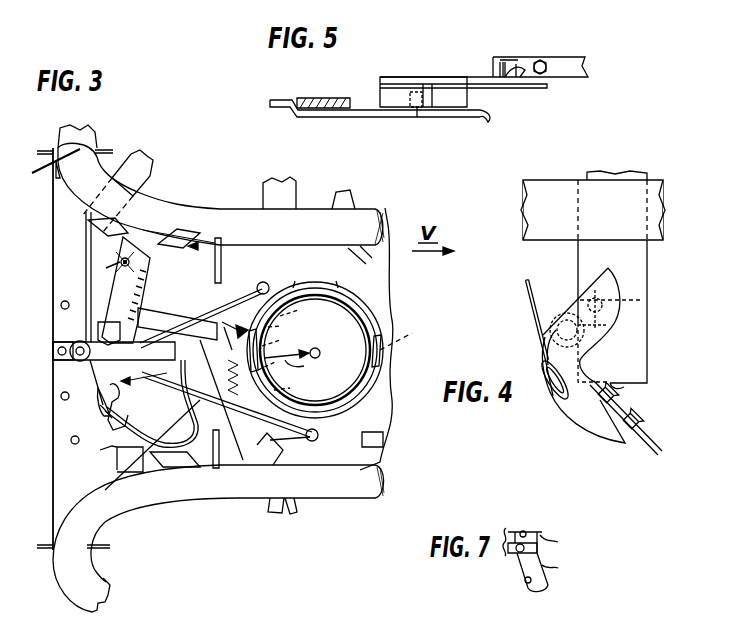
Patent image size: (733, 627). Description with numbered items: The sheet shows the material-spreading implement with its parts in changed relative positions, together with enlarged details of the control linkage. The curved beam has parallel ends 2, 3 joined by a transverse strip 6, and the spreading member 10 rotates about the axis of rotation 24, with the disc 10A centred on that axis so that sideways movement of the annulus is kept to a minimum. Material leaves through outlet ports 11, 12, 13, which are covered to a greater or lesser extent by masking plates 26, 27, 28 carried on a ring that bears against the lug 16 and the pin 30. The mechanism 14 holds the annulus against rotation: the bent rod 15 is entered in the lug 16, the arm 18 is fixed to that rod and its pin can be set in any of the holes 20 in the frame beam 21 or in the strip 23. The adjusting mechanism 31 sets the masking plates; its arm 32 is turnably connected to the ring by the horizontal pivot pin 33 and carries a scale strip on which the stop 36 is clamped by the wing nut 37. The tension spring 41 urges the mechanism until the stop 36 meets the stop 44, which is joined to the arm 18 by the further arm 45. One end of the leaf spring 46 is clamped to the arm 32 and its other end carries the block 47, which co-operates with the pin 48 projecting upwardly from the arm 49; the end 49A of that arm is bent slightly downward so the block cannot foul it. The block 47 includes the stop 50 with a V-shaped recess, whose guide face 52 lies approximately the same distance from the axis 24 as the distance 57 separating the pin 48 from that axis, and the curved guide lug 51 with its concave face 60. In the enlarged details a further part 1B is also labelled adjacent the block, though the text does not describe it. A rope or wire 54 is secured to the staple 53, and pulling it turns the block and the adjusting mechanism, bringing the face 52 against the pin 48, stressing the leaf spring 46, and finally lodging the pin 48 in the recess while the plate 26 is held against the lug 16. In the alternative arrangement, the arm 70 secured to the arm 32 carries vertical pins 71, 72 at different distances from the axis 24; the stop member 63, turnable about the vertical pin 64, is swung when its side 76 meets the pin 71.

In FIG. 3, the end of the beam 2 is at (227, 217).
In FIG. 3, the end of the beam 3 is at (345, 490).
In FIG. 3, the transverse strip 6 is at (223, 250).
In FIG. 3, the spreading member 10 is at (380, 402).
In FIG. 3, the disc 10A is at (318, 322).
In FIG. 3, the outlet port 11 is at (285, 325).
In FIG. 3, the outlet port 12 is at (286, 347).
In FIG. 3, the outlet port 13 is at (292, 391).
In FIG. 3, the mechanism 14 is at (60, 361).
In FIG. 3, the bent rod 15 is at (208, 320).
In FIG. 3, the lug 16 is at (270, 290).
In FIG. 3, the arm 18 is at (58, 340).
In FIG. 5, the base plate 1B is at (340, 97).
In FIG. 4, the base plate 1B is at (528, 202).
In FIG. 3, the holes 20 is at (65, 305).
In FIG. 3, the frame beam 21 is at (58, 205).
In FIG. 3, the strip 23 is at (152, 180).
In FIG. 3, the axis of rotation 24 is at (319, 350).
In FIG. 3, the masking plate 26 is at (300, 309).
In FIG. 3, the masking plate 27 is at (273, 338).
In FIG. 3, the masking plate 28 is at (275, 370).
In FIG. 3, the pin 30 is at (402, 333).
In FIG. 3, the adjusting mechanism 31 is at (175, 279).
In FIG. 3, the arm 32 is at (168, 322).
In FIG. 3, the horizontal pivot pin 33 is at (235, 326).
In FIG. 3, the stop 36 is at (122, 258).
In FIG. 3, the wing nut 37 is at (114, 268).
In FIG. 3, the tension spring 41 is at (244, 398).
In FIG. 3, the stop 44 is at (98, 325).
In FIG. 4, the further arm 45 is at (624, 170).
In FIG. 3, the leaf spring 46 is at (193, 437).
In FIG. 5, the leaf spring 46 is at (576, 65).
In FIG. 4, the leaf spring 46 is at (652, 455).
In FIG. 3, the block 47 is at (112, 424).
In FIG. 5, the block 47 is at (432, 80).
In FIG. 4, the block 47 is at (587, 422).
In FIG. 5, the pin 48 is at (417, 110).
In FIG. 4, the pin 48 is at (624, 296).
In FIG. 5, the arm 49 is at (383, 113).
In FIG. 4, the arm 49 is at (633, 347).
In FIG. 5, the end of the arm 49A is at (492, 118).
In FIG. 4, the end of the arm 49A is at (633, 387).
In FIG. 4, the stop 50 is at (608, 266).
In FIG. 5, the curved guide lug 51 is at (446, 92).
In FIG. 4, the curved guide lug 51 is at (550, 333).
In FIG. 5, the guide face 52 is at (384, 92).
In FIG. 4, the guide face 52 is at (582, 284).
In FIG. 3, the staple 53 is at (100, 415).
In FIG. 5, the staple 53 is at (492, 72).
In FIG. 4, the staple 53 is at (556, 406).
In FIG. 3, the rope or wire 54 is at (88, 228).
In FIG. 4, the rope or wire 54 is at (526, 286).
In FIG. 3, the distance 57 is at (303, 369).
In FIG. 4, the concave face 60 is at (615, 322).
In FIG. 7, the stop member 63 is at (506, 530).
In FIG. 7, the vertical pin 64 is at (561, 571).
In FIG. 7, the arm 70 is at (523, 564).
In FIG. 7, the vertical pin 71 is at (523, 530).
In FIG. 7, the vertical pin 72 is at (526, 583).
In FIG. 7, the side of the stop member 76 is at (560, 543).